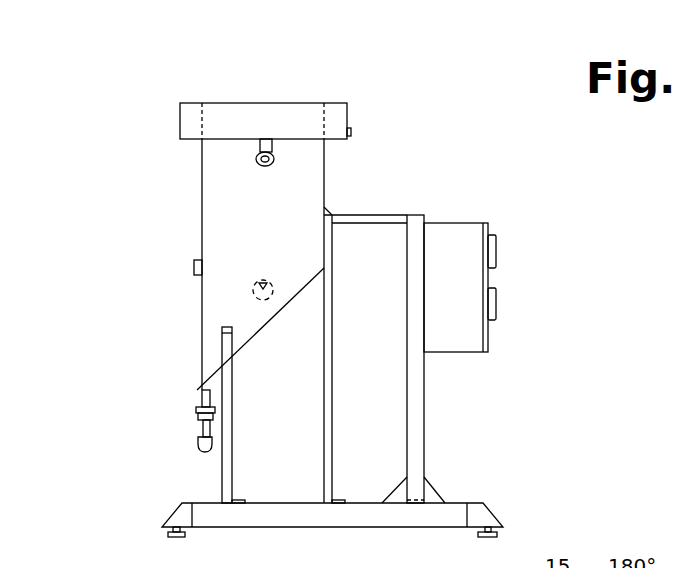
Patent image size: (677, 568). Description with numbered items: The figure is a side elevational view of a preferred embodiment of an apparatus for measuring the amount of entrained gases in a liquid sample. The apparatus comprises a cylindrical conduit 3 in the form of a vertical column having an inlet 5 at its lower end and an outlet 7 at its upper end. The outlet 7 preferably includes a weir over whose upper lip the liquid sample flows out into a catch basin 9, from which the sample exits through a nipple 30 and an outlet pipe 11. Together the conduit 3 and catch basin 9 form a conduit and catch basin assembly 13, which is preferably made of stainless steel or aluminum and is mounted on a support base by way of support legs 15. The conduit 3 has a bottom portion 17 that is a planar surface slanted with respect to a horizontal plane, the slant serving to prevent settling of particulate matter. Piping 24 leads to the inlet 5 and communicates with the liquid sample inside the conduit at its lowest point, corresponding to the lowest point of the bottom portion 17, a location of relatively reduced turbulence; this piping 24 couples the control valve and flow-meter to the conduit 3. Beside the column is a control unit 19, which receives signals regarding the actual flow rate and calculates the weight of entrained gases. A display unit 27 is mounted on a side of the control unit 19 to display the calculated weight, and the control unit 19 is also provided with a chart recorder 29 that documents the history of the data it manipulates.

The cylindrical conduit 3 is at (326, 172).
The inlet 5 is at (203, 388).
The outlet 7 is at (324, 103).
The catch basin 9 is at (337, 118).
The outlet pipe 11 is at (254, 167).
The conduit and catch basin assembly 13 is at (145, 128).
The support legs 15 is at (224, 476).
The bottom portion 17 is at (258, 335).
The control unit 19 is at (455, 237).
The piping 24 is at (202, 432).
The display unit 27 is at (498, 240).
The chart recorder 29 is at (499, 302).
The nipple 30 is at (266, 139).